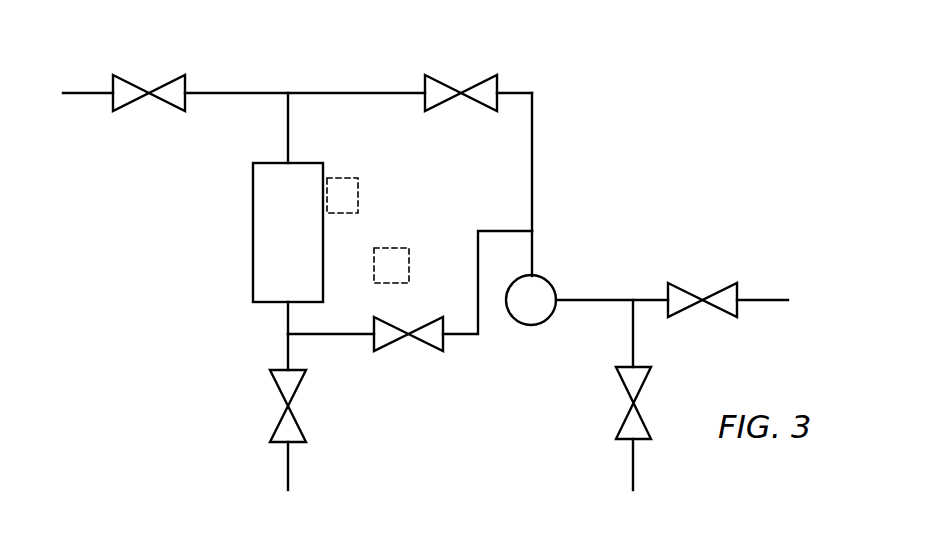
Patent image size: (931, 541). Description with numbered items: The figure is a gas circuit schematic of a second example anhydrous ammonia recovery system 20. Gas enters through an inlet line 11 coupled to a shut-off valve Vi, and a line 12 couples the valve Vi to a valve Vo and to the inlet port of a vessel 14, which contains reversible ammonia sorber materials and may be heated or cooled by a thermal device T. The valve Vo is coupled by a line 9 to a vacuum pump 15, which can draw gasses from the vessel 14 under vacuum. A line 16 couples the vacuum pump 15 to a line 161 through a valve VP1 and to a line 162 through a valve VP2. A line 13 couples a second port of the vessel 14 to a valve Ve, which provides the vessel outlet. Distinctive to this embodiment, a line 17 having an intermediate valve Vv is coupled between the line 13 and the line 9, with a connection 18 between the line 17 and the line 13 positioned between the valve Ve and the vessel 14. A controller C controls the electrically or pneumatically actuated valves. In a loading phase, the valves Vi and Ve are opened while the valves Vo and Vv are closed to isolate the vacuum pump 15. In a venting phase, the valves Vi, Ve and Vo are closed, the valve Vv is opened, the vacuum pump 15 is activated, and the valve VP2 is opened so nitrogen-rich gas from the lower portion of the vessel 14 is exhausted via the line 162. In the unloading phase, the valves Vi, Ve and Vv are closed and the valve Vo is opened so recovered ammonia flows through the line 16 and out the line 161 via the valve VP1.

The line 9 is at (532, 133).
The inlet line 11 is at (86, 95).
The line 12 is at (393, 94).
The line 13 is at (285, 312).
The vessel 14 is at (258, 212).
The vacuum pump 15 is at (534, 283).
The line 16 is at (588, 297).
The line 17 is at (508, 231).
The connection 18 is at (285, 336).
The anhydrous ammonia recovery system 20 is at (637, 93).
The line 161 is at (630, 468).
The line 162 is at (745, 302).
The valve Vi is at (128, 80).
The valve Vo is at (440, 78).
The valve Vv is at (405, 340).
The valve Ve is at (280, 416).
The valve VP1 is at (620, 385).
The valve VP2 is at (683, 288).
The thermal device T is at (342, 195).
The controller C is at (391, 265).